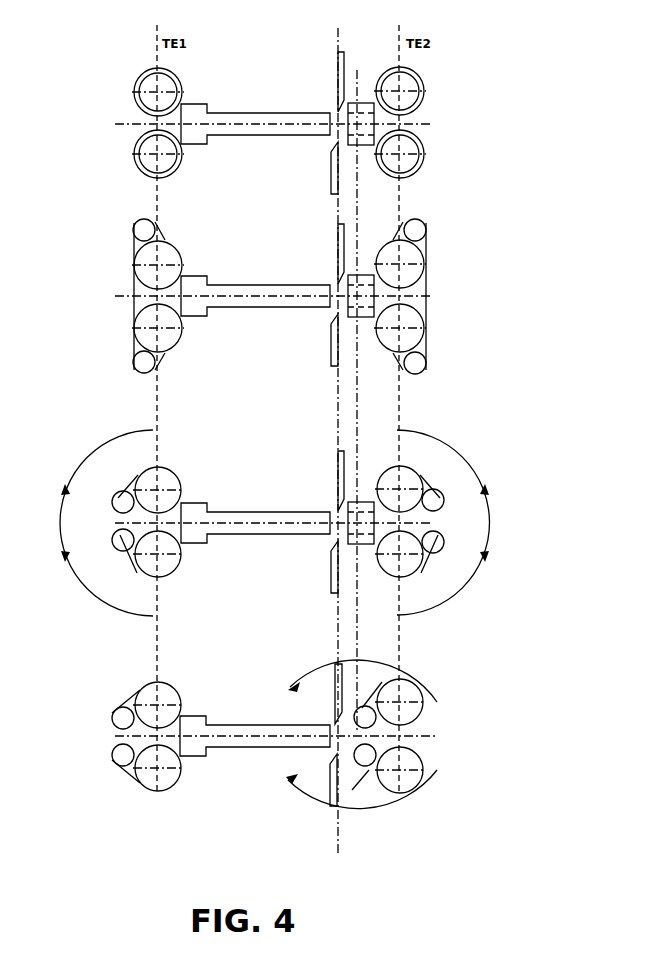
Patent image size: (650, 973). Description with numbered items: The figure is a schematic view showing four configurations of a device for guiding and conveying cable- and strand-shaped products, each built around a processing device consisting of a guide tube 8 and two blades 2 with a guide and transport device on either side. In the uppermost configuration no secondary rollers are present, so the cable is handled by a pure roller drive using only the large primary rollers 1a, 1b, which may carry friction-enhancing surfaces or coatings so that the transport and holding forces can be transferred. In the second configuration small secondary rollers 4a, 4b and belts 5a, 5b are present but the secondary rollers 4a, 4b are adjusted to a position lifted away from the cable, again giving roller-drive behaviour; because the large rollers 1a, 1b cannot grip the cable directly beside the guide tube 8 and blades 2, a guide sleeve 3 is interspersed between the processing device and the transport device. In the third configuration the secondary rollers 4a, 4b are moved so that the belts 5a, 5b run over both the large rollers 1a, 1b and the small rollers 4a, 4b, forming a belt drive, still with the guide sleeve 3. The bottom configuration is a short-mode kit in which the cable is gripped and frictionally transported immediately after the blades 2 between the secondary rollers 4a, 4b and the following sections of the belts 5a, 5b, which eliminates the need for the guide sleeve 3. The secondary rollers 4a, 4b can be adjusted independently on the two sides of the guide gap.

The primary roller 1a is at (148, 83).
The primary roller 1b is at (148, 152).
The blade 2 is at (337, 85).
The guide sleeve 3 is at (360, 103).
The secondary roller 4a is at (144, 230).
The secondary roller 4b is at (143, 362).
The belt 5a is at (163, 236).
The belt 5b is at (163, 355).
The guide tube 8 is at (230, 113).